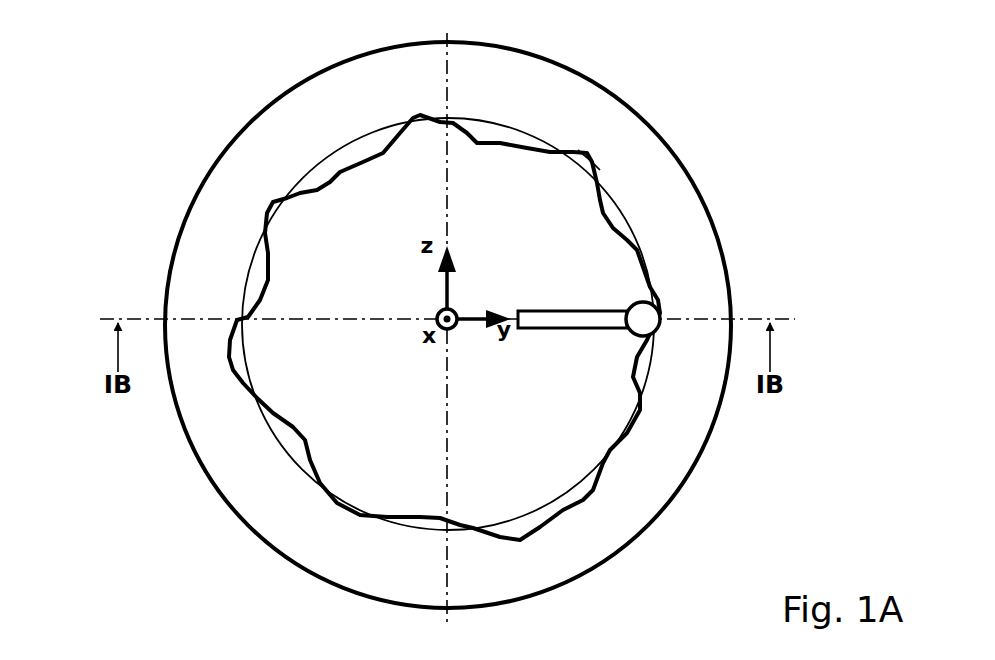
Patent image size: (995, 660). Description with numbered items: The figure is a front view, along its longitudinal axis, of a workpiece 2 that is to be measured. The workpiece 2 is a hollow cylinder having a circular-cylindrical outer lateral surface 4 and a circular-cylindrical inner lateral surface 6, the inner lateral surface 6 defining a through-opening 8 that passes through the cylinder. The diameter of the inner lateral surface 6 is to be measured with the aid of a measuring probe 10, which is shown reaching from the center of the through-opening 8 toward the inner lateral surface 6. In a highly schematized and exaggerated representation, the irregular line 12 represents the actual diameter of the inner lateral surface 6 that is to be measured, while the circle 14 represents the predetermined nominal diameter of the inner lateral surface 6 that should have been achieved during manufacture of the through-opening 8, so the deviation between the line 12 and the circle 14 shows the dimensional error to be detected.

The workpiece 2 is at (243, 68).
The outer lateral surface 4 is at (336, 66).
The inner lateral surface 6 is at (515, 122).
The through-opening 8 is at (336, 253).
The measuring probe 10 is at (598, 310).
The line 12 is at (577, 152).
The circle 14 is at (590, 156).